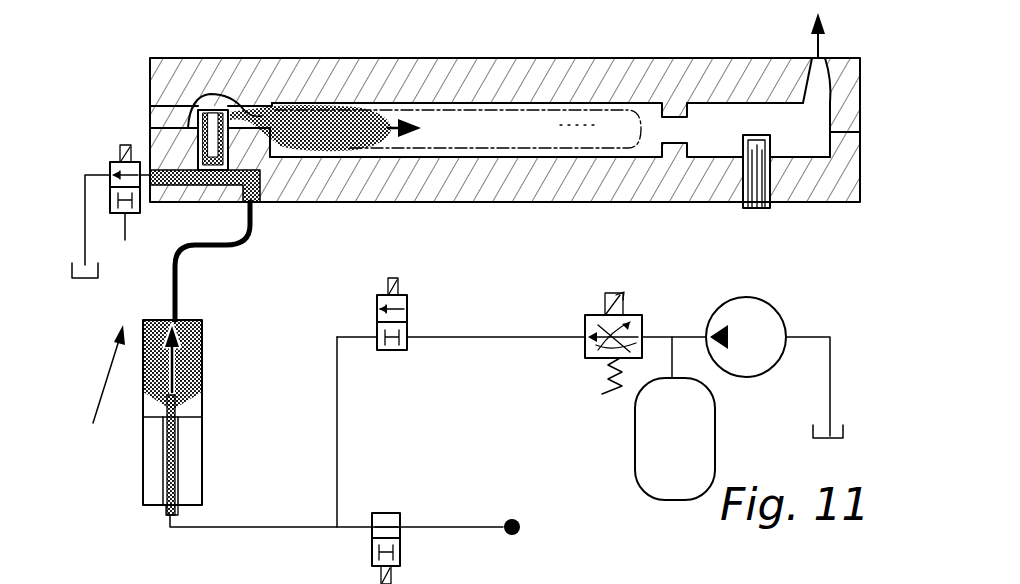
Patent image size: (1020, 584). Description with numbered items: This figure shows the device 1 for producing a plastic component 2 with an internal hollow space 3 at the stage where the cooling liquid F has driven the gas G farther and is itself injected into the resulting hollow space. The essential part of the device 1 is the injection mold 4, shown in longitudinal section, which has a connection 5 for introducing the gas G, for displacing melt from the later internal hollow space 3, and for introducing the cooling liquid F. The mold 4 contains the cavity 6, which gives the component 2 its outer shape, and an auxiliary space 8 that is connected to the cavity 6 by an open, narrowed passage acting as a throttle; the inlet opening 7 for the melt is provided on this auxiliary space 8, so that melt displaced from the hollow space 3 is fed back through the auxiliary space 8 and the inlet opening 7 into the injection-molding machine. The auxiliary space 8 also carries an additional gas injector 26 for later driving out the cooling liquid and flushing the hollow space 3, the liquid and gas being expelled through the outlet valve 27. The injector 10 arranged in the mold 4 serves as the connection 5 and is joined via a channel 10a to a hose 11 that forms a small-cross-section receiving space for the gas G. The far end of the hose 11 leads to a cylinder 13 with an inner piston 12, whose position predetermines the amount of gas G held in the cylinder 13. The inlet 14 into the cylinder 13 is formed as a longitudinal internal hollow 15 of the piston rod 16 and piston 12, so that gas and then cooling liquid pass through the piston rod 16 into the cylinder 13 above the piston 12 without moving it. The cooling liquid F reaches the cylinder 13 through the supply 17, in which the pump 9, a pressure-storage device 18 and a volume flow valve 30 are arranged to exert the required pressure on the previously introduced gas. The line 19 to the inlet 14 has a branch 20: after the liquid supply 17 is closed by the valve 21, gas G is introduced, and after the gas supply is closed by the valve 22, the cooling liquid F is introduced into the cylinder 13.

The device 1 is at (102, 397).
The plastic component 2 is at (583, 152).
The internal hollow space 3 is at (507, 130).
The injection mold 4 is at (405, 180).
The connection 5 is at (226, 108).
The cavity 6 is at (253, 150).
The inlet opening 7 is at (822, 62).
The auxiliary space 8 is at (810, 157).
The pump 9 is at (766, 312).
The injector 10 is at (186, 110).
The channel 10a is at (228, 190).
The hose 11 is at (213, 250).
The piston 12 is at (200, 403).
The cylinder 13 is at (202, 458).
The inlet 14 is at (165, 518).
The longitudinal internal hollow 15 is at (172, 437).
The piston rod 16 is at (180, 487).
The supply 17 is at (483, 340).
The pressure-storage device 18 is at (638, 438).
The line 19 is at (247, 528).
The branch 20 is at (337, 528).
The valve 21 is at (408, 318).
The valve 22 is at (401, 543).
The additional gas injector 26 is at (751, 160).
The outlet valve 27 is at (111, 211).
The volume flow valve 30 is at (585, 358).
The cooling liquid F is at (348, 150).
The gas G is at (543, 130).